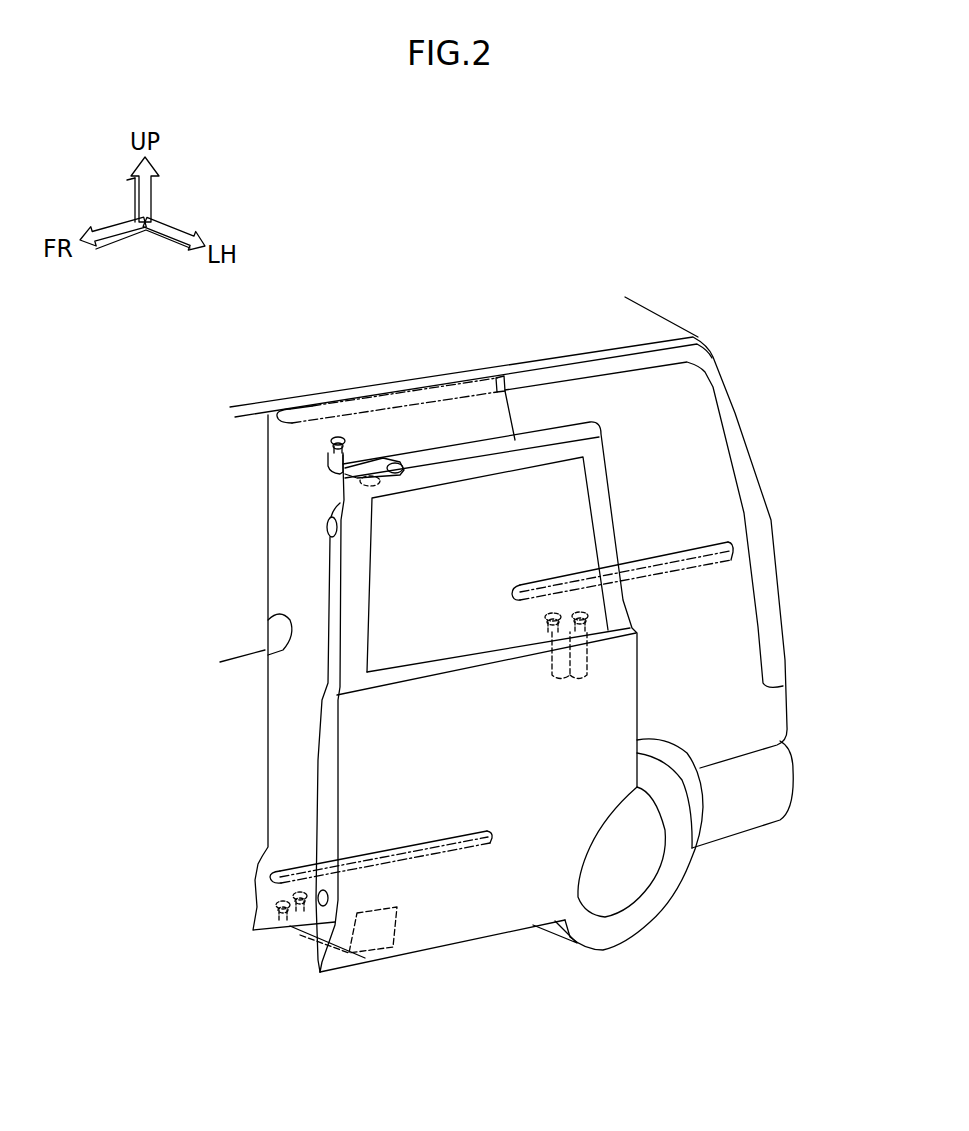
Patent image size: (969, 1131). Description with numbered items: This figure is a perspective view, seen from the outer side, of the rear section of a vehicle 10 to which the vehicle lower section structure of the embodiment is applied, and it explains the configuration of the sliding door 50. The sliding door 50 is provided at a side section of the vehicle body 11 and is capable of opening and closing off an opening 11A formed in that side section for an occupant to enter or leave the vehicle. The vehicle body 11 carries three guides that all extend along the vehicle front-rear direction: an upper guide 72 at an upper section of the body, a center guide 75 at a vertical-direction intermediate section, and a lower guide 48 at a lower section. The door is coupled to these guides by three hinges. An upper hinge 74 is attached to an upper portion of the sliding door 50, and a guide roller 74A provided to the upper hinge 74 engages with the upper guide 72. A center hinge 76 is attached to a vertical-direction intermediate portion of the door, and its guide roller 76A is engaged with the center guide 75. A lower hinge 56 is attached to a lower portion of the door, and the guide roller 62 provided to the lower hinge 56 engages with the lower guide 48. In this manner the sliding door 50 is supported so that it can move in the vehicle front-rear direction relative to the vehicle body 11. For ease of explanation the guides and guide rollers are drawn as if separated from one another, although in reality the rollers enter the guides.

The vehicle 10 is at (423, 272).
The vehicle body 11 is at (311, 352).
The opening 11A is at (268, 620).
The sliding door 50 is at (455, 947).
The upper guide 72 is at (313, 422).
The upper hinge 74 is at (326, 465).
The guide roller 74A is at (350, 440).
The center guide 75 is at (707, 545).
The center hinge 76 is at (597, 663).
The guide roller 76A is at (553, 612).
The lower guide 48 is at (297, 870).
The guide roller 62 is at (290, 890).
The lower hinge 56 is at (300, 940).